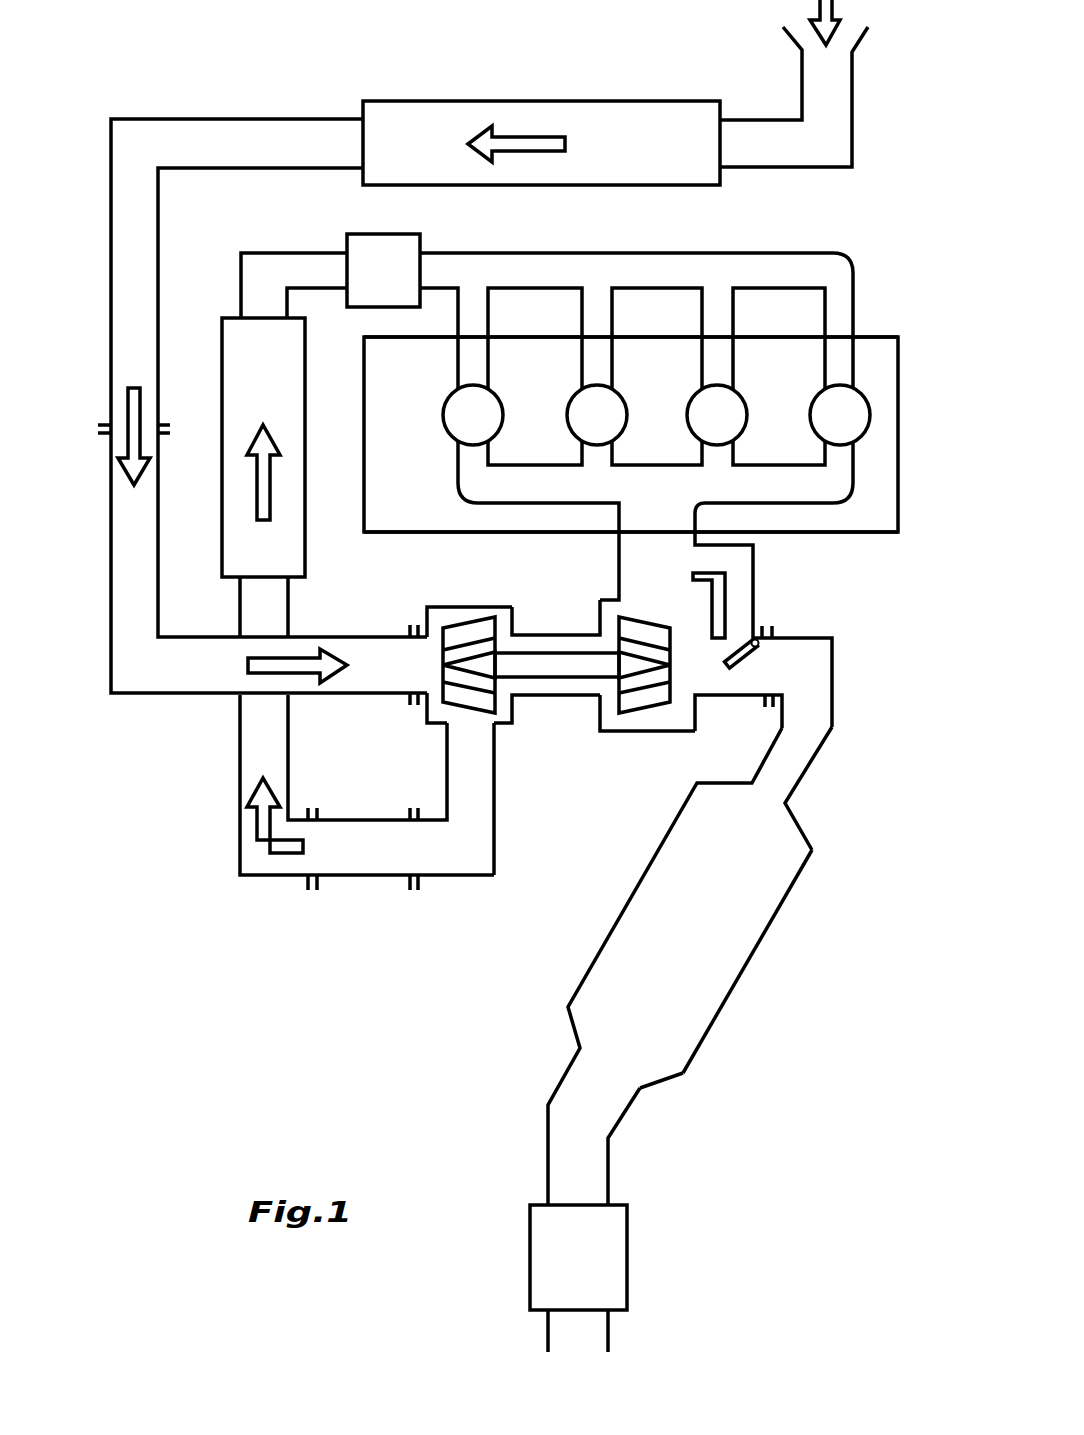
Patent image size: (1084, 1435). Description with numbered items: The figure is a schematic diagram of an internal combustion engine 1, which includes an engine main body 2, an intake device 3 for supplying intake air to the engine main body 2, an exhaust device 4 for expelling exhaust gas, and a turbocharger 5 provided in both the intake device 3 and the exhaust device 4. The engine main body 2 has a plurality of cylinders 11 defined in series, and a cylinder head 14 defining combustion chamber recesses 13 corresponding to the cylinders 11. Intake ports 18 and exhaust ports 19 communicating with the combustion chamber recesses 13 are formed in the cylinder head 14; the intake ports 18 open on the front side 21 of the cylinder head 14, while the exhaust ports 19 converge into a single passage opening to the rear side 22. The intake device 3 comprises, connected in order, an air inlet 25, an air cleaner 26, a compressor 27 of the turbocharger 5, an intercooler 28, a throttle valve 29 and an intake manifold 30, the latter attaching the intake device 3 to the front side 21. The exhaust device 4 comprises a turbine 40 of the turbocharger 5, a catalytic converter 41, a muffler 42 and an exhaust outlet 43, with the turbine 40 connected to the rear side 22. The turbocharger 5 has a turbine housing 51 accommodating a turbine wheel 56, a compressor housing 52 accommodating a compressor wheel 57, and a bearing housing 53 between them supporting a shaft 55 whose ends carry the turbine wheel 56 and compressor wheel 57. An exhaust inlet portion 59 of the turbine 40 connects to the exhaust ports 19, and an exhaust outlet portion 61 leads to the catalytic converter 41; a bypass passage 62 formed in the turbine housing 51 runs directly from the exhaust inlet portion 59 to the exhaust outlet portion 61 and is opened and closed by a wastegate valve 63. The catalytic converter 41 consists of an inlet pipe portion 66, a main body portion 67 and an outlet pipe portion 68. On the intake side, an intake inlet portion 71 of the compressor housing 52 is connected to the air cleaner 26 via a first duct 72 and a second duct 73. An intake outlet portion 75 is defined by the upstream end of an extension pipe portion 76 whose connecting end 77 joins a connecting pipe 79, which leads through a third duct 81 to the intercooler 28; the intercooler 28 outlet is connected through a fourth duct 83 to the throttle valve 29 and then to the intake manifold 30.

The internal combustion engine 1 is at (198, 62).
The engine main body 2 is at (662, 412).
The intake device 3 is at (377, 82).
The exhaust device 4 is at (726, 963).
The turbocharger 5 is at (471, 767).
The cylinders 11 is at (656, 314).
The combustion chamber recesses 13 is at (810, 417).
The cylinder head 14 is at (880, 508).
The intake ports 18 is at (856, 356).
The exhaust ports 19 is at (800, 490).
The front side of the cylinder head 21 is at (893, 333).
The rear side of the cylinder head 22 is at (883, 533).
The air inlet 25 is at (862, 40).
The air cleaner 26 is at (627, 100).
The compressor 27 is at (416, 606).
The intercooler 28 is at (222, 533).
The throttle valve 29 is at (367, 233).
The intake manifold 30 is at (837, 257).
The turbine 40 is at (635, 750).
The catalytic converter 41 is at (694, 966).
The muffler 42 is at (627, 1258).
The exhaust outlet 43 is at (608, 1323).
The turbine housing 51 is at (618, 733).
The compressor housing 52 is at (428, 715).
The bearing housing 53 is at (562, 633).
The shaft 55 is at (548, 678).
The turbine wheel 56 is at (652, 703).
The compressor wheel 57 is at (457, 623).
The exhaust inlet portion 59 is at (620, 565).
The exhaust outlet portion 61 is at (752, 695).
The bypass passage 62 is at (750, 588).
The wastegate valve 63 is at (740, 660).
The inlet pipe portion 66 is at (835, 697).
The main body portion 67 is at (768, 930).
The outlet pipe portion 68 is at (623, 1118).
The intake inlet portion 71 is at (420, 695).
The first duct 72 is at (110, 215).
The second duct 73 is at (110, 596).
The intake outlet portion 75 is at (447, 760).
The extension pipe portion 76 is at (490, 878).
The connecting end 77 is at (430, 880).
The connecting pipe 79 is at (352, 880).
The third duct 81 is at (240, 833).
The fourth duct 83 is at (239, 263).